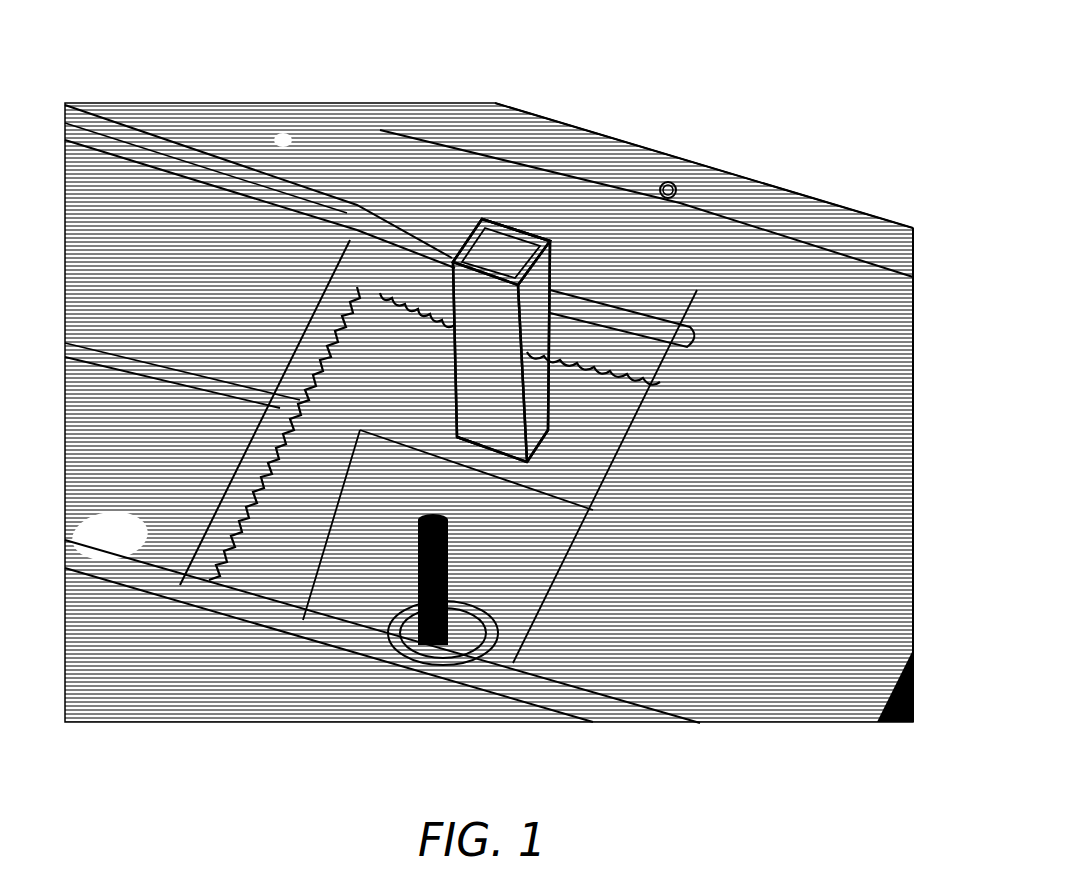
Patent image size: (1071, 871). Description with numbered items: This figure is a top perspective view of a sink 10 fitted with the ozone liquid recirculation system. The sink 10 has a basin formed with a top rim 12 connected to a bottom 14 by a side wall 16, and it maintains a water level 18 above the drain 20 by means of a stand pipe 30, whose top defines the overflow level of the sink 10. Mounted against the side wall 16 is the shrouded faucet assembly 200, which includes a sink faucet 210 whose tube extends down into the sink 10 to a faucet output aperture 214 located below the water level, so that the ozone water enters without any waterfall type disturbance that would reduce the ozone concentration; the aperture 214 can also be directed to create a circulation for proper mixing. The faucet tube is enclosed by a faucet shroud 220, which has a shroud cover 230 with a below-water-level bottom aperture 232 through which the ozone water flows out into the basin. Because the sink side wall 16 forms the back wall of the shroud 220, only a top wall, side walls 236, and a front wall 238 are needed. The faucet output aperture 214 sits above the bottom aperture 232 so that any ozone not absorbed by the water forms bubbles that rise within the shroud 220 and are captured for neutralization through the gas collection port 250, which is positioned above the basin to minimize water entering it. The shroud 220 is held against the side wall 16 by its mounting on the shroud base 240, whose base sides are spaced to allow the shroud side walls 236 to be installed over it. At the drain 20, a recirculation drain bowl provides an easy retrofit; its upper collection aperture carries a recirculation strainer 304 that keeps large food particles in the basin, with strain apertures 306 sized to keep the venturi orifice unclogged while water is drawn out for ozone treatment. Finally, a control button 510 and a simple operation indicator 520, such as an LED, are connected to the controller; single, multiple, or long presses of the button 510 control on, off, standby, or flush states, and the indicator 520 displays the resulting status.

The sink 10 is at (634, 457).
The top rim 12 is at (650, 348).
The bottom 14 is at (620, 325).
The side wall 16 is at (315, 312).
The water level 18 is at (660, 382).
The drain 20 is at (490, 660).
The stand pipe 30 is at (427, 587).
The shrouded faucet assembly 200 is at (515, 232).
The sink faucet 210 is at (572, 300).
The faucet output aperture 214 is at (560, 507).
The faucet shroud 220 is at (462, 221).
The shroud cover 230 is at (457, 247).
The bottom aperture 232 is at (497, 447).
The side walls 236 is at (540, 457).
The front wall 238 is at (477, 443).
The shroud base 240 is at (548, 258).
The gas collection port 250 is at (490, 243).
The recirculation strainer 304 is at (397, 627).
The strain apertures 306 is at (453, 660).
The control button 510 is at (669, 184).
The operation indicator 520 is at (676, 190).